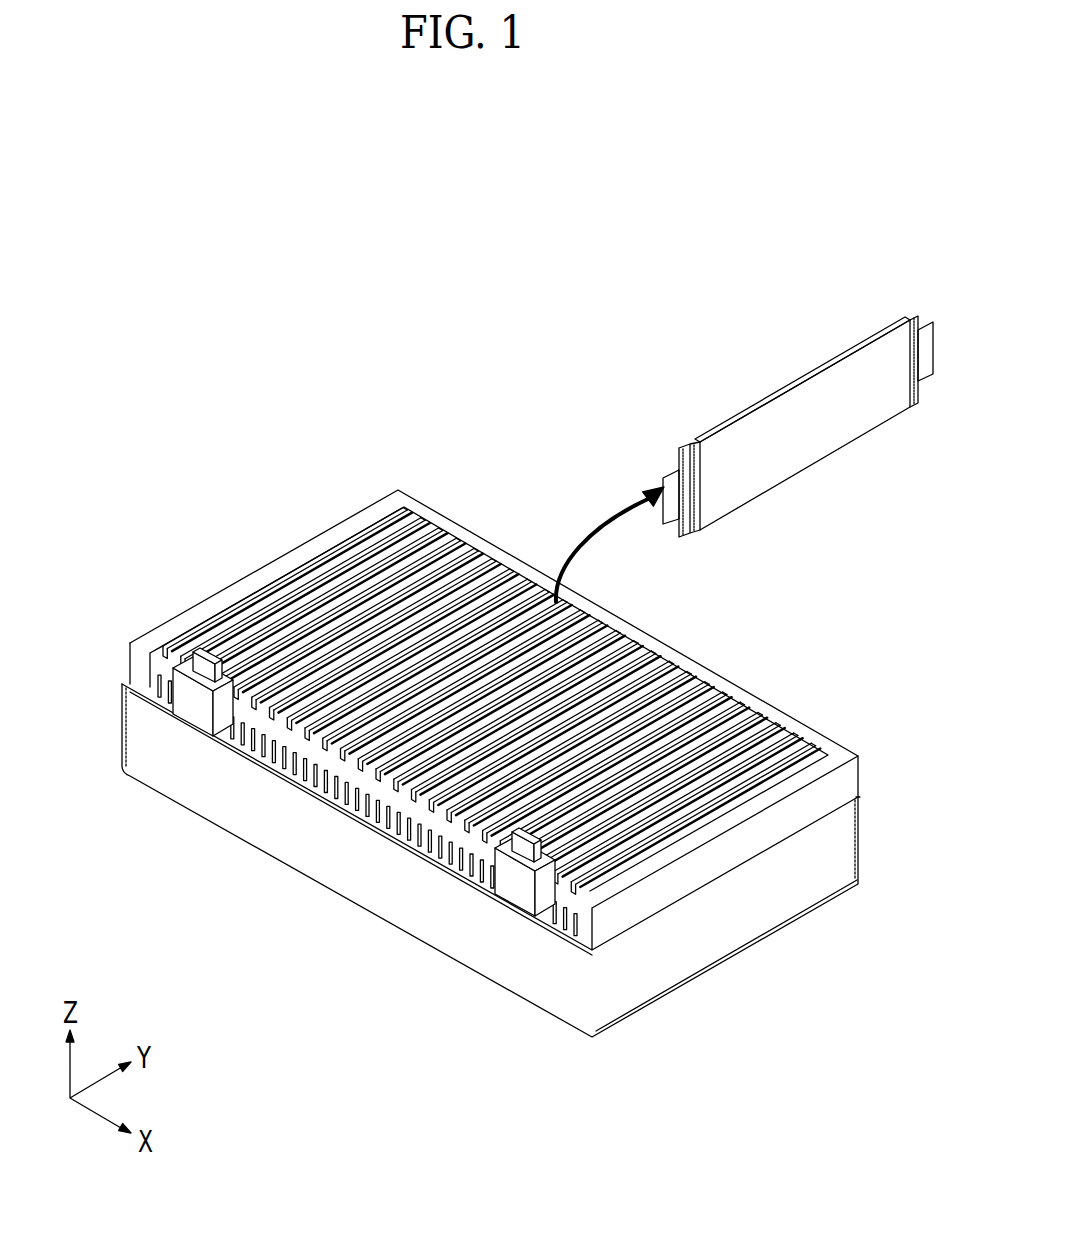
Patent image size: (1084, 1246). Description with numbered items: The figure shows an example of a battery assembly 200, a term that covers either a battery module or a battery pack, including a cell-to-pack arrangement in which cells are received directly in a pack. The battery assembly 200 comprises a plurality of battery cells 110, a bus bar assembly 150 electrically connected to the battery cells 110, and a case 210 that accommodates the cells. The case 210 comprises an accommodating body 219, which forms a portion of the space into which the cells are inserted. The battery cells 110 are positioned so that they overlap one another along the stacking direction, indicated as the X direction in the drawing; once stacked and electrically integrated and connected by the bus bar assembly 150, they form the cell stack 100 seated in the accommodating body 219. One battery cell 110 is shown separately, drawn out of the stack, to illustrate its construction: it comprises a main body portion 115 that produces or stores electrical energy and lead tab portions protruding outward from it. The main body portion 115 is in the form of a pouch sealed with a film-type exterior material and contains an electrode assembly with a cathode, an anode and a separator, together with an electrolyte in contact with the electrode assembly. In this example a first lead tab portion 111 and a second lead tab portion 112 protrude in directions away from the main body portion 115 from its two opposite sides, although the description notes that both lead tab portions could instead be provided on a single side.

The battery assembly 200 is at (464, 695).
The cell stack 100 is at (336, 550).
The battery cell 110 is at (798, 386).
The first lead tab portion 111 is at (684, 446).
The second lead tab portion 112 is at (886, 328).
The main body portion 115 is at (829, 394).
The bus bar assembly 150 is at (229, 730).
The accommodating body 219 is at (491, 763).
The case 210 is at (385, 897).